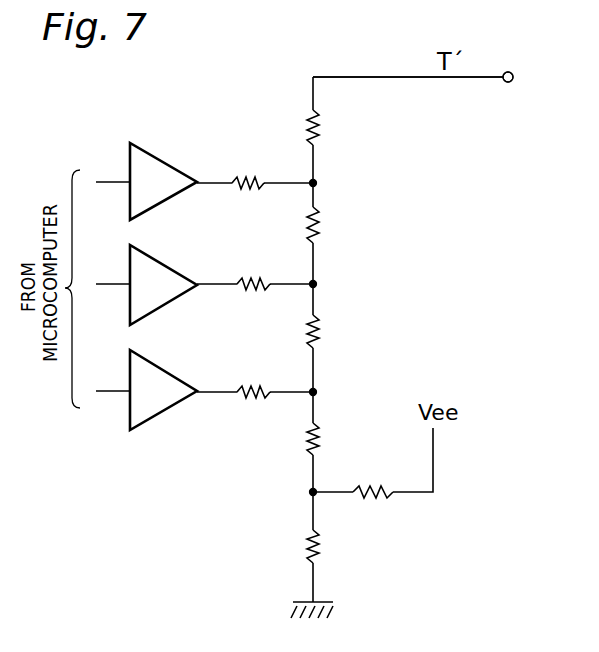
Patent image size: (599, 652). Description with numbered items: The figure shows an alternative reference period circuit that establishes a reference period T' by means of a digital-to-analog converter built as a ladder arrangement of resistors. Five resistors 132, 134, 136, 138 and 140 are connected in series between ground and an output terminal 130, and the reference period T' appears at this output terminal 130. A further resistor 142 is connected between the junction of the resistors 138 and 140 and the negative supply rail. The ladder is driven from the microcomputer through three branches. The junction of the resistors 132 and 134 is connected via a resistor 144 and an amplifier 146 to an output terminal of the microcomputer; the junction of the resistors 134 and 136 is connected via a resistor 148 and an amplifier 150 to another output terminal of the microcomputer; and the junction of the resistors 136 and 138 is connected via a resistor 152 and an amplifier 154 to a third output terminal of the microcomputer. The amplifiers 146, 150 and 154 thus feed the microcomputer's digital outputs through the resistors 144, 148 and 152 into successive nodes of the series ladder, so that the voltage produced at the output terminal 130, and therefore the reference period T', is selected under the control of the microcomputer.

The output terminal 130 is at (510, 83).
The resistor 132 is at (320, 133).
The resistor 134 is at (320, 227).
The resistor 136 is at (320, 330).
The resistor 138 is at (320, 441).
The resistor 140 is at (320, 549).
The resistor 142 is at (373, 491).
The resistor 144 is at (243, 178).
The amplifier 146 is at (135, 146).
The resistor 148 is at (247, 282).
The amplifier 150 is at (140, 251).
The resistor 152 is at (247, 390).
The amplifier 154 is at (142, 356).